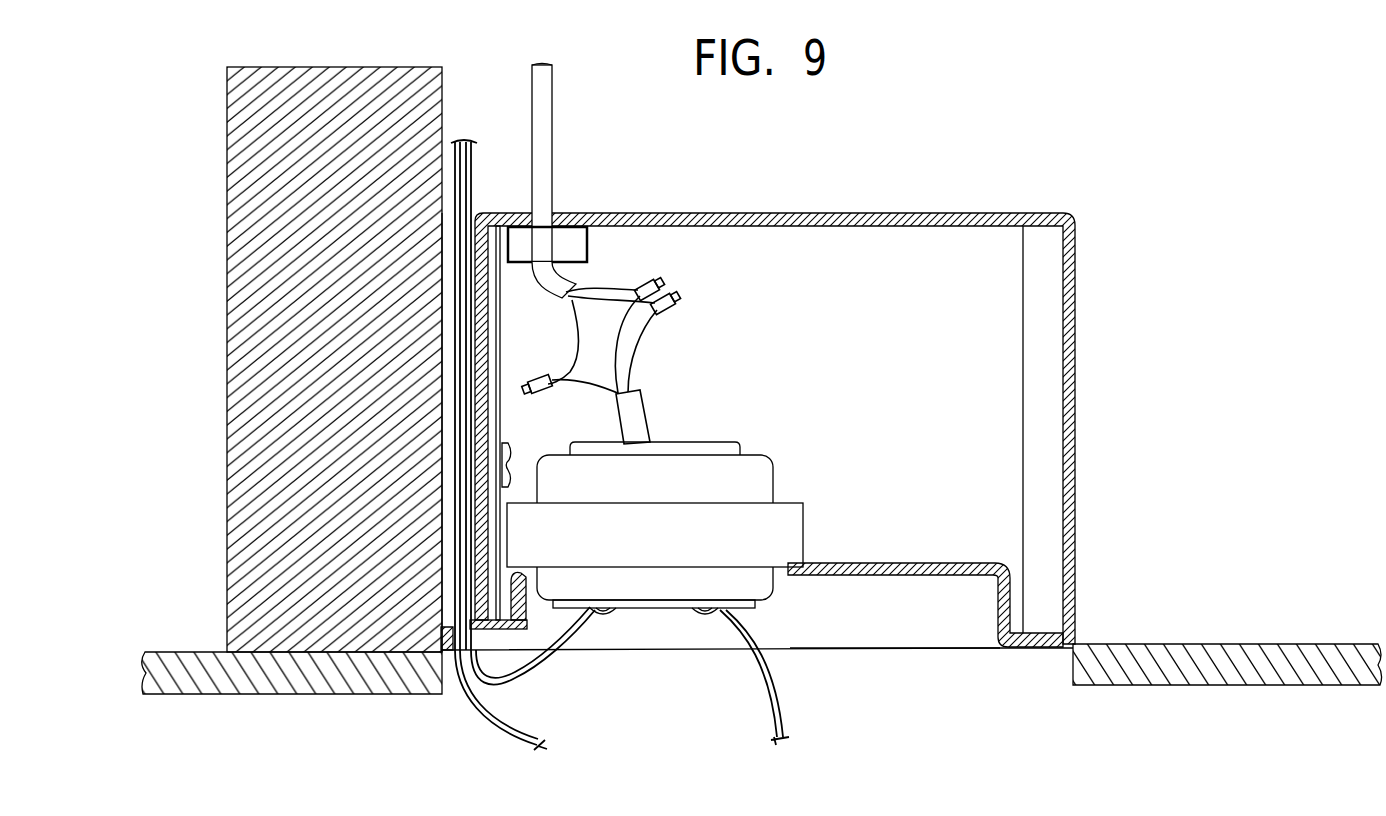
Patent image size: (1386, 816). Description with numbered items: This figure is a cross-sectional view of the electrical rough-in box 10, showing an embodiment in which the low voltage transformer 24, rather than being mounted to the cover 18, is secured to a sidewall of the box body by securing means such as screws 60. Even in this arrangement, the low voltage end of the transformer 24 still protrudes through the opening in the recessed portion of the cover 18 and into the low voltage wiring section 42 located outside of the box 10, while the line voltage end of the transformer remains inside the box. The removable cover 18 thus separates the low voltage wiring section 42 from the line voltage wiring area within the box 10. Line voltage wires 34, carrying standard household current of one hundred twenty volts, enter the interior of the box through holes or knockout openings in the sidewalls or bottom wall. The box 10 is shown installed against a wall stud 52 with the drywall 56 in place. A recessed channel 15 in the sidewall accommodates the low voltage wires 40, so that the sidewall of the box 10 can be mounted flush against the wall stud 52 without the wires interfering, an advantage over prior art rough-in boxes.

The box 10 is at (1096, 330).
The channel 15 is at (447, 339).
The cover 18 is at (862, 580).
The low voltage transformer 24 is at (641, 551).
The line voltage wires 34 is at (545, 127).
The low voltage wires 40 is at (458, 178).
The low voltage wiring section 42 is at (909, 614).
The wall stud 52 is at (250, 262).
The drywall 56 is at (292, 696).
The screws 60 is at (510, 468).